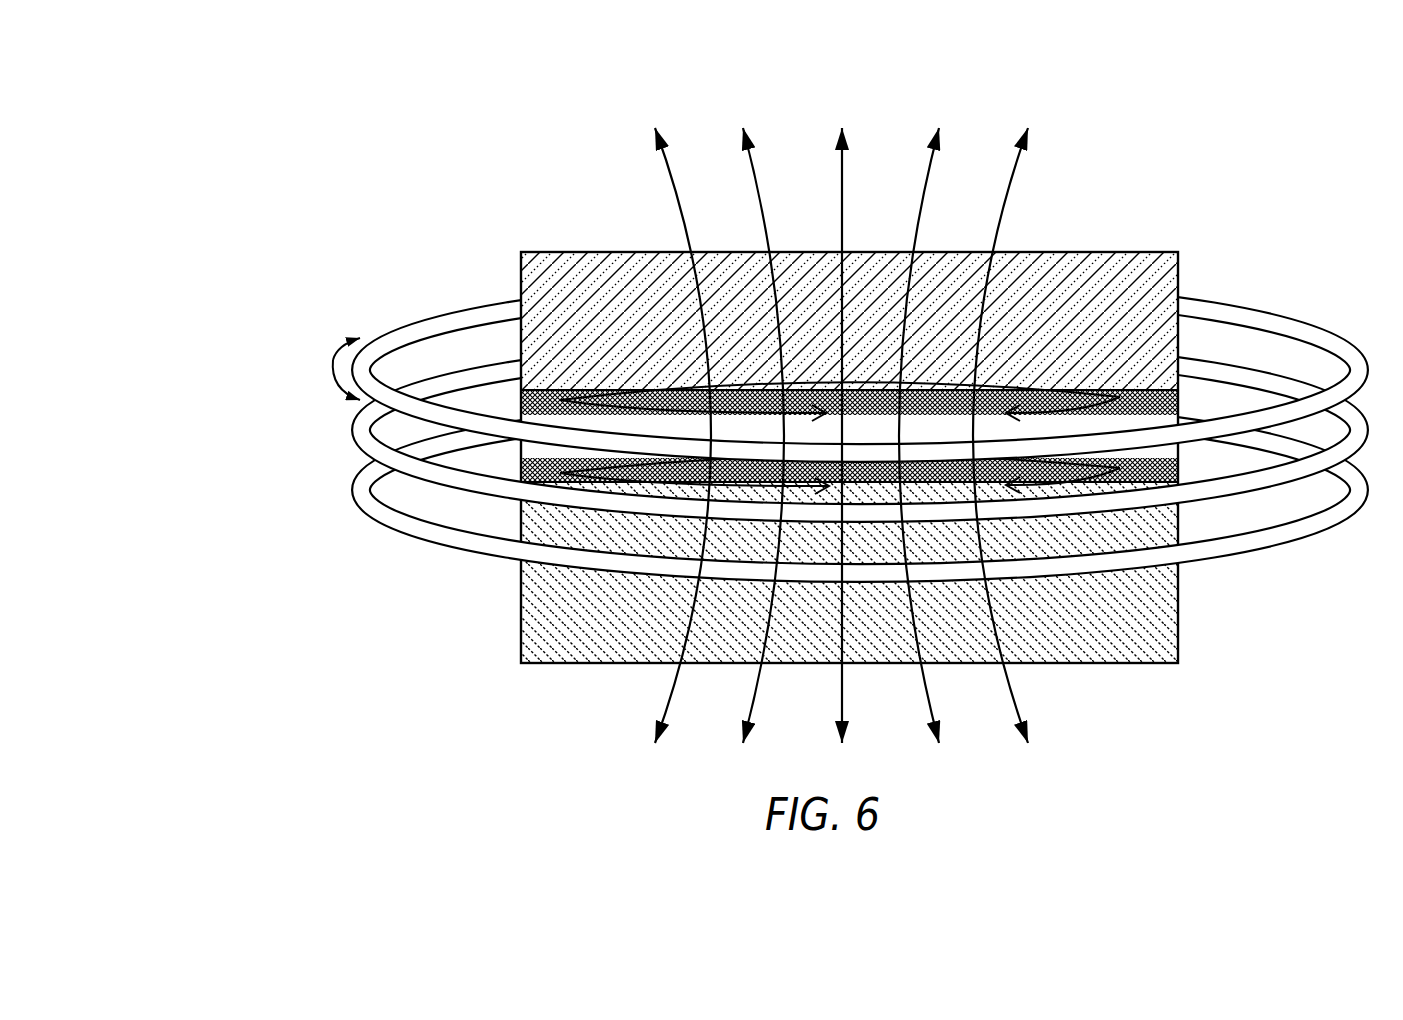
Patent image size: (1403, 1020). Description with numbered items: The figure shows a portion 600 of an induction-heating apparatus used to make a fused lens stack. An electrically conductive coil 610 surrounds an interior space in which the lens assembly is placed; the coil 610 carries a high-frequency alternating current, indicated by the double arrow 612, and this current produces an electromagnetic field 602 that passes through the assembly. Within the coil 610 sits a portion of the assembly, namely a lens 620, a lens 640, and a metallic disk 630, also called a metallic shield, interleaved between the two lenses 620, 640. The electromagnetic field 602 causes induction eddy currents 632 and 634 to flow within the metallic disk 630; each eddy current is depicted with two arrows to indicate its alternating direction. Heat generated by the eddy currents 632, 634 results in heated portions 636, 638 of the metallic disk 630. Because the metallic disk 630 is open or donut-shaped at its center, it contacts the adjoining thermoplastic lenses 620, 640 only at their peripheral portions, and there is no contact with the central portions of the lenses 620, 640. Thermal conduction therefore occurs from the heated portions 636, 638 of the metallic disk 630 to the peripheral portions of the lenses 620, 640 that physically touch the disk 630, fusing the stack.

The portion of apparatus 600 is at (1206, 151).
The electromagnetic field 602 is at (622, 120).
The electrically conductive coil 610 is at (748, 478).
The double arrow 612 is at (333, 360).
The lens 620 is at (1102, 252).
The metallic disk 630 is at (674, 478).
The induction eddy current 632 is at (655, 390).
The induction eddy current 634 is at (683, 485).
The heated portion 636 is at (545, 402).
The heated portion 638 is at (396, 611).
The lens 640 is at (1072, 666).